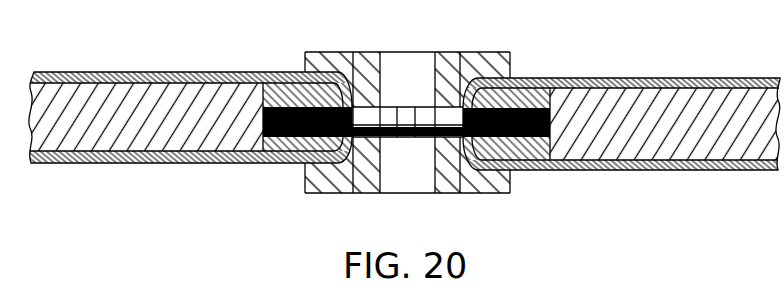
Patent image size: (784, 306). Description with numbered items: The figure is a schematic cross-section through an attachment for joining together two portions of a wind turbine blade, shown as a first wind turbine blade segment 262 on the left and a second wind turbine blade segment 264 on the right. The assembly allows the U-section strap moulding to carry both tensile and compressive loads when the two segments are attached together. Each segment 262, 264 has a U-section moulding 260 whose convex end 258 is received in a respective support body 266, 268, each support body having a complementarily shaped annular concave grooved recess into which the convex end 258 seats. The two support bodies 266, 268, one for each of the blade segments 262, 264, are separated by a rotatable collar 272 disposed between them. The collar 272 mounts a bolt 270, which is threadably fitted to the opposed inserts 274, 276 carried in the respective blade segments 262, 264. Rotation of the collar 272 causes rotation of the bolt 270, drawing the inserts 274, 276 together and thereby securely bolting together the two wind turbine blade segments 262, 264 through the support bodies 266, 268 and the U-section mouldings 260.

The convex end 258 is at (348, 56).
The U-section moulding 260 is at (356, 194).
The first wind turbine blade segment 262 is at (127, 165).
The second wind turbine blade segment 264 is at (681, 173).
The first support body 266 is at (311, 194).
The second support body 268 is at (492, 196).
The bolt 270 is at (328, 62).
The rotatable collar 272 is at (406, 102).
The first insert 274 is at (282, 80).
The second insert 276 is at (528, 82).